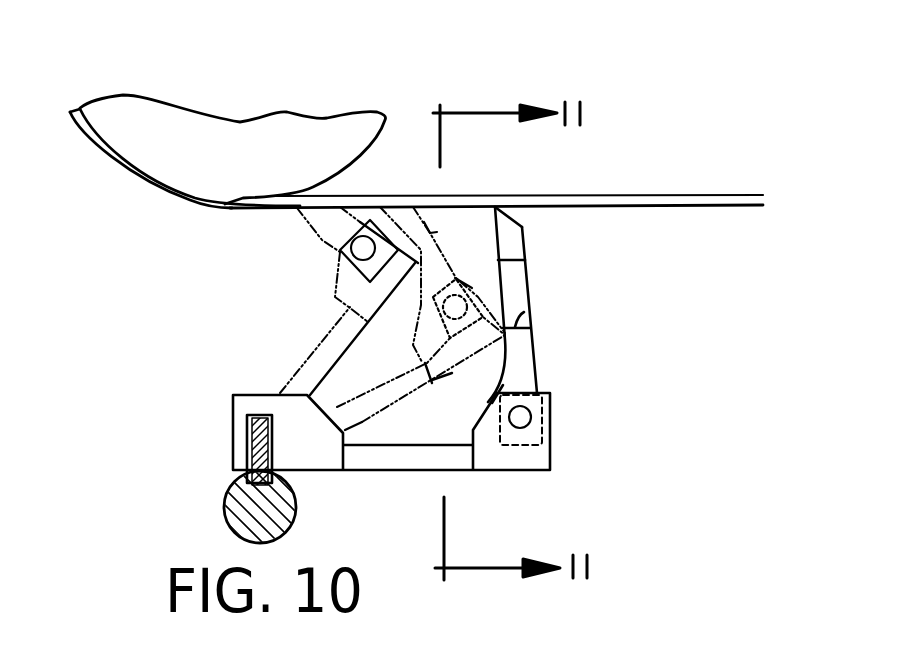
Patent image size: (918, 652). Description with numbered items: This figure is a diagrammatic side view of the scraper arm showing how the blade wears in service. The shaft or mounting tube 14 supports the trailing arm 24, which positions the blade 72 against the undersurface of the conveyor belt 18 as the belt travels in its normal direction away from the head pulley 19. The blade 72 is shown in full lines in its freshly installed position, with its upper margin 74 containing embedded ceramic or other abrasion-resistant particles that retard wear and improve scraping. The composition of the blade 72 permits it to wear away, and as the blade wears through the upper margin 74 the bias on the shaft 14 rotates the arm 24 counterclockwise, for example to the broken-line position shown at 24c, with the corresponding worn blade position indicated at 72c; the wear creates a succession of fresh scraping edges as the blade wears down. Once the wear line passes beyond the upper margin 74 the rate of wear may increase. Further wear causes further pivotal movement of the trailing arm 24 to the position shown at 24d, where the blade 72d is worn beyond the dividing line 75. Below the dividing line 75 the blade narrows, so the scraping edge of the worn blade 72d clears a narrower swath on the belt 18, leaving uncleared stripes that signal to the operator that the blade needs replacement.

The mounting tube 14 is at (238, 505).
The return run of conveyor belt 18 is at (496, 187).
The head pulley 19 is at (250, 137).
The trailing arm 24 is at (362, 473).
The trailing arm in worn position 24c is at (380, 423).
The trailing arm in further worn position 24d is at (325, 336).
The blade 72 is at (522, 352).
The blade in worn position 72c is at (437, 235).
The worn blade 72d is at (318, 230).
The upper margin of blade 74 is at (524, 243).
The dividing line 75 is at (531, 307).